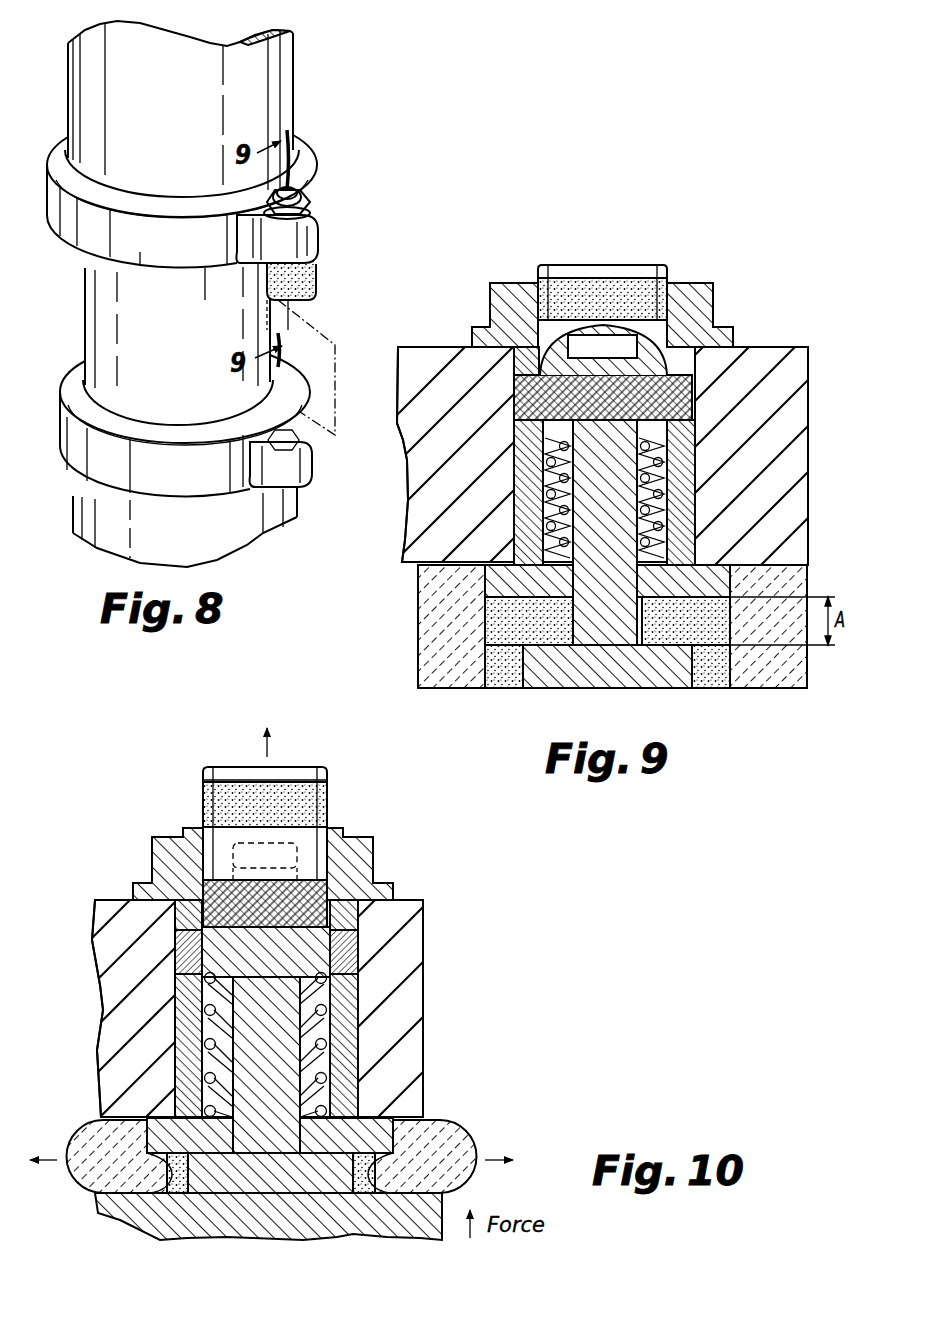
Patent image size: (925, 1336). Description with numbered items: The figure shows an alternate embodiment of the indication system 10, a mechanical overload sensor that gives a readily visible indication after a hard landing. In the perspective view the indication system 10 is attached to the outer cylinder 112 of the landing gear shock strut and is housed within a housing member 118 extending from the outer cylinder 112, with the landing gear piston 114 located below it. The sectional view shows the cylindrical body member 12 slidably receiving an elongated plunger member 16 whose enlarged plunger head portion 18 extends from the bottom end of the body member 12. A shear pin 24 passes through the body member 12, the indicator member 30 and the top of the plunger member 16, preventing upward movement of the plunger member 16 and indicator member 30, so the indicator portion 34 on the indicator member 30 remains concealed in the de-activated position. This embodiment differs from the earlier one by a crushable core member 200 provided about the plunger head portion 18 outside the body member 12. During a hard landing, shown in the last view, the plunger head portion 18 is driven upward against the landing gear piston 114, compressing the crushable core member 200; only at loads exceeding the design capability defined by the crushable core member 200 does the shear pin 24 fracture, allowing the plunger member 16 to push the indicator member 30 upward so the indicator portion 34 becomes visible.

In FIG. 8, the indication system 10 is at (326, 170).
In FIG. 8, the outer cylinder 112 is at (282, 77).
In FIG. 8, the landing gear piston 114 is at (306, 456).
In FIG. 8, the housing member 118 is at (322, 232).
In FIG. 9, the housing member 118 is at (813, 355).
In FIG. 10, the housing member 118 is at (418, 972).
In FIG. 8, the crushable core member 200 is at (318, 276).
In FIG. 9, the crushable core member 200 is at (415, 650).
In FIG. 10, the crushable core member 200 is at (80, 1135).
In FIG. 9, the shear pin 24 is at (598, 385).
In FIG. 10, the shear pin 24 is at (250, 895).
In FIG. 9, the indicator member 30 is at (636, 256).
In FIG. 9, the plunger member 16 is at (612, 540).
In FIG. 9, the plunger head portion 18 is at (578, 668).
In FIG. 10, the plunger head portion 18 is at (230, 1172).
In FIG. 10, the indicator portion 34 is at (300, 800).
In FIG. 10, the body member 12 is at (362, 1138).